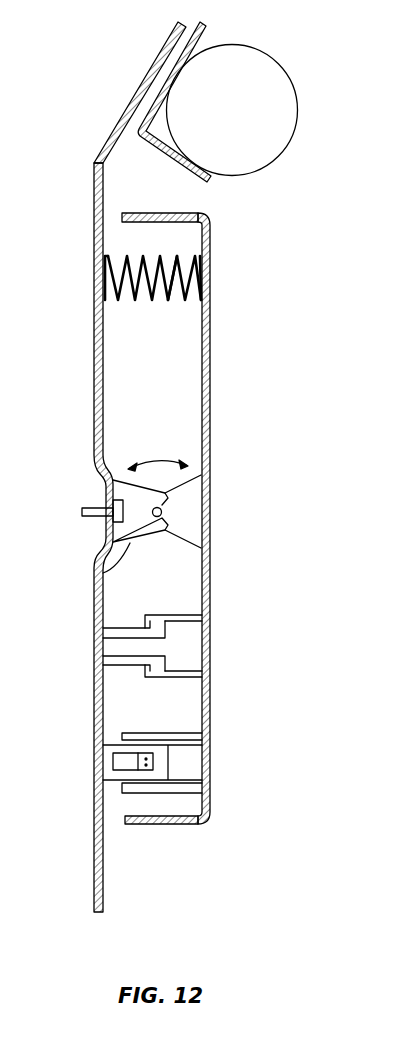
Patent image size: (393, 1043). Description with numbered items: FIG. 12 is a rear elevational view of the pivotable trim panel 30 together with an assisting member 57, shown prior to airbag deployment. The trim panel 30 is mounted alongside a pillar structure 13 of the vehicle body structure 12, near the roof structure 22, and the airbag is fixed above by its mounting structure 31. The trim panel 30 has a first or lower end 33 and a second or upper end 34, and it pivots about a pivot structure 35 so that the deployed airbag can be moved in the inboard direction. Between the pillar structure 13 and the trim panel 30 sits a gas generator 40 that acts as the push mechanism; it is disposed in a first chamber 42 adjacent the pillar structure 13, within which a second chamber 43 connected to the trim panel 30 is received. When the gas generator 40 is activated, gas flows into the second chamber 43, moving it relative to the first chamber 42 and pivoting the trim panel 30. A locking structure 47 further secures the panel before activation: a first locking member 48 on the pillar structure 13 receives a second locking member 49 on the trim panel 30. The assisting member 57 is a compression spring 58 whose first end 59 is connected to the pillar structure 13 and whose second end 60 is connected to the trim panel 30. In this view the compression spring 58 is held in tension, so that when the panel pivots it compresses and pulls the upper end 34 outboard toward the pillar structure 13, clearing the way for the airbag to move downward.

The body structure 12 is at (299, 108).
The pillar structure 13 is at (94, 220).
The roof structure 22 is at (117, 123).
The mounting structure 31 is at (204, 36).
The trim panel 30 is at (210, 590).
The upper end 34 is at (180, 214).
The lower end 33 is at (153, 824).
The assisting member 57 is at (182, 303).
The compression spring 58 is at (175, 262).
The first end 59 is at (105, 259).
The second end 60 is at (206, 278).
The pivot structure 35 is at (105, 568).
The locking structure 47 is at (122, 628).
The first locking member 48 is at (122, 664).
The second locking member 49 is at (178, 678).
The first chamber 42 is at (116, 744).
The second chamber 43 is at (187, 794).
The gas generator 40 is at (116, 772).